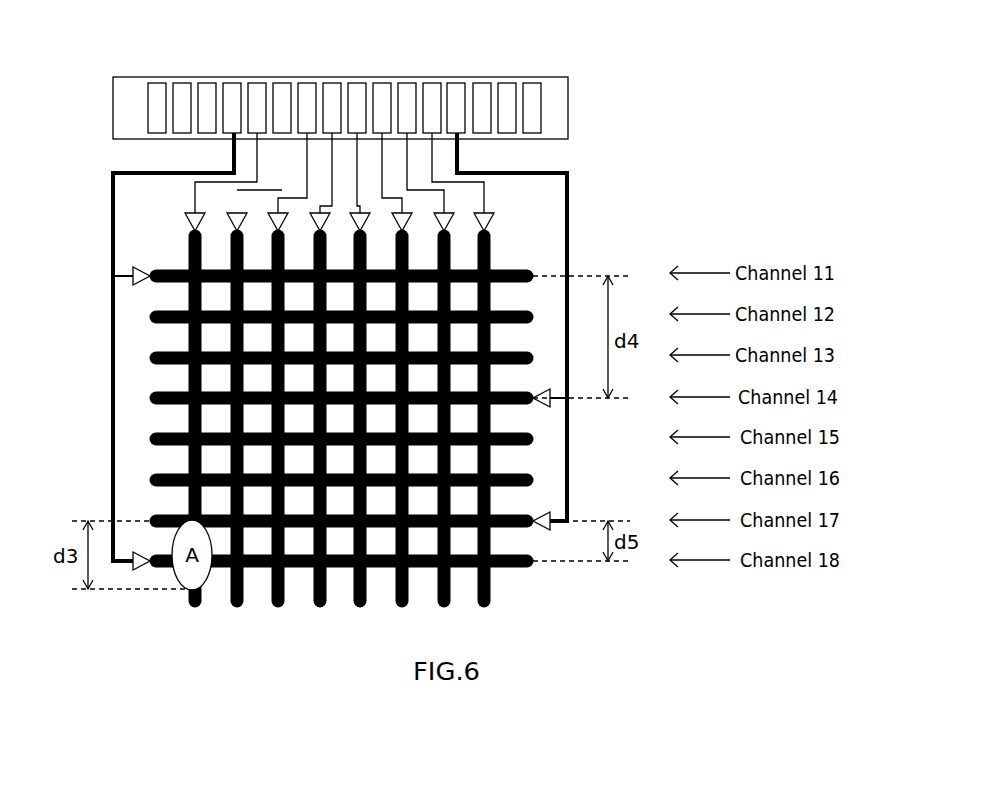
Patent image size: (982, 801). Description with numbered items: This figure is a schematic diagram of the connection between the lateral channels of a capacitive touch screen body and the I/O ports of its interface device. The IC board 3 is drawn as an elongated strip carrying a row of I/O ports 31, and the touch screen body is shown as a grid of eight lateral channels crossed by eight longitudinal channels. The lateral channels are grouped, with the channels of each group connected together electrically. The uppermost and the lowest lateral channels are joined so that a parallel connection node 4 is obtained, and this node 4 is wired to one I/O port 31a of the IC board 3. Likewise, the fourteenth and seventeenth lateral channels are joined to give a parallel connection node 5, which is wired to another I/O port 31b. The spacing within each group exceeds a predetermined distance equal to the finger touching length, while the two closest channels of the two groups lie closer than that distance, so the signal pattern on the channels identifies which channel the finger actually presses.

The IC board 3 is at (585, 113).
The I/O ports 31 is at (145, 112).
The I/O port 31a is at (233, 80).
The I/O port 31b is at (456, 80).
The parallel connection node 4 is at (228, 136).
The parallel connection node 5 is at (462, 136).